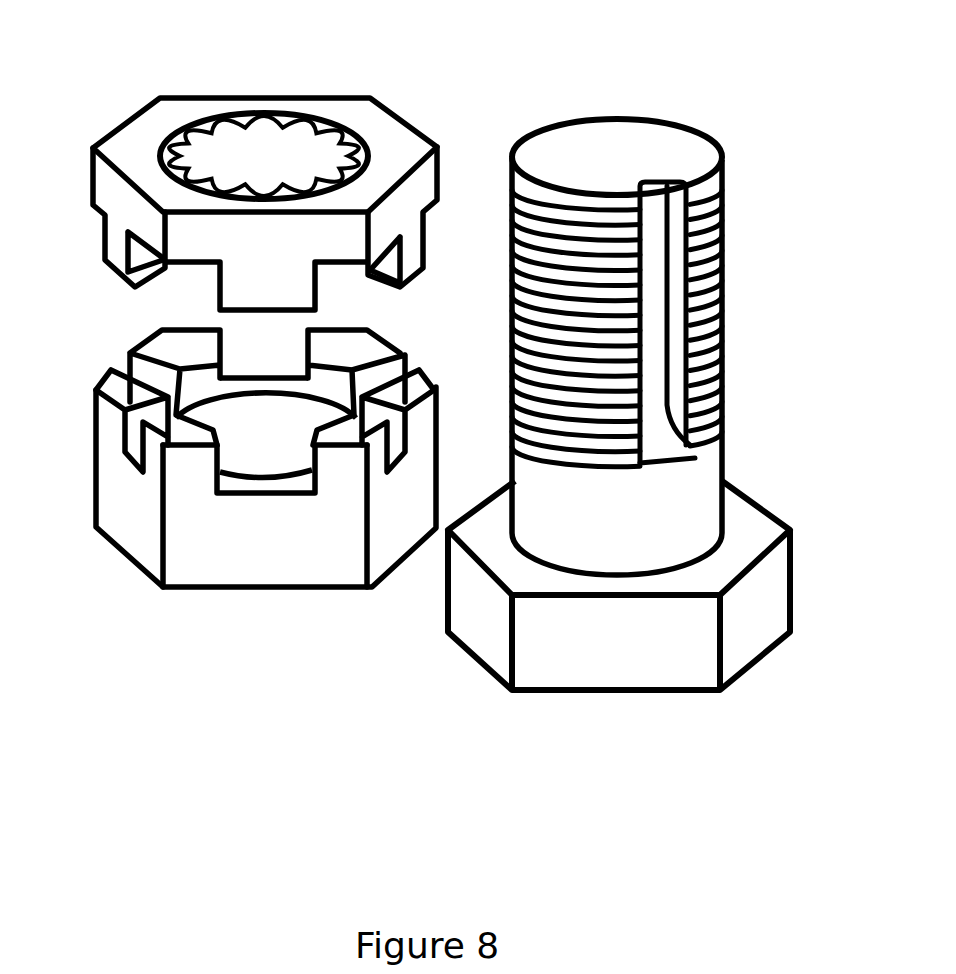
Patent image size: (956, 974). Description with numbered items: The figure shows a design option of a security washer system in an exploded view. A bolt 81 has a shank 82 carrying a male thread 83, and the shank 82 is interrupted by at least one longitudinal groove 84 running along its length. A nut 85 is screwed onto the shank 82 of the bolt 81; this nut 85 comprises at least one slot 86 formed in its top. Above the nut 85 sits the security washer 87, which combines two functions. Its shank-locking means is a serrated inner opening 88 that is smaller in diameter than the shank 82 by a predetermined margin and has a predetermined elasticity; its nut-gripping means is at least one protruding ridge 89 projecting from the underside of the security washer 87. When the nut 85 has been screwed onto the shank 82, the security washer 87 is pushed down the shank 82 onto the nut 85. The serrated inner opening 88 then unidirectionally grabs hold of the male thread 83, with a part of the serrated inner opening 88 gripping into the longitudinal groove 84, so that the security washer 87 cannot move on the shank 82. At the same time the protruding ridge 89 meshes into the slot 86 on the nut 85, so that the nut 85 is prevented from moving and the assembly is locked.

The bolt 81 is at (567, 645).
The shank 82 is at (692, 502).
The male thread 83 is at (720, 302).
The longitudinal groove 84 is at (653, 257).
The nut 85 is at (268, 560).
The slot 86 is at (258, 457).
The security washer 87 is at (143, 130).
The serrated inner opening 88 is at (285, 148).
The protruding ridge 89 is at (253, 270).